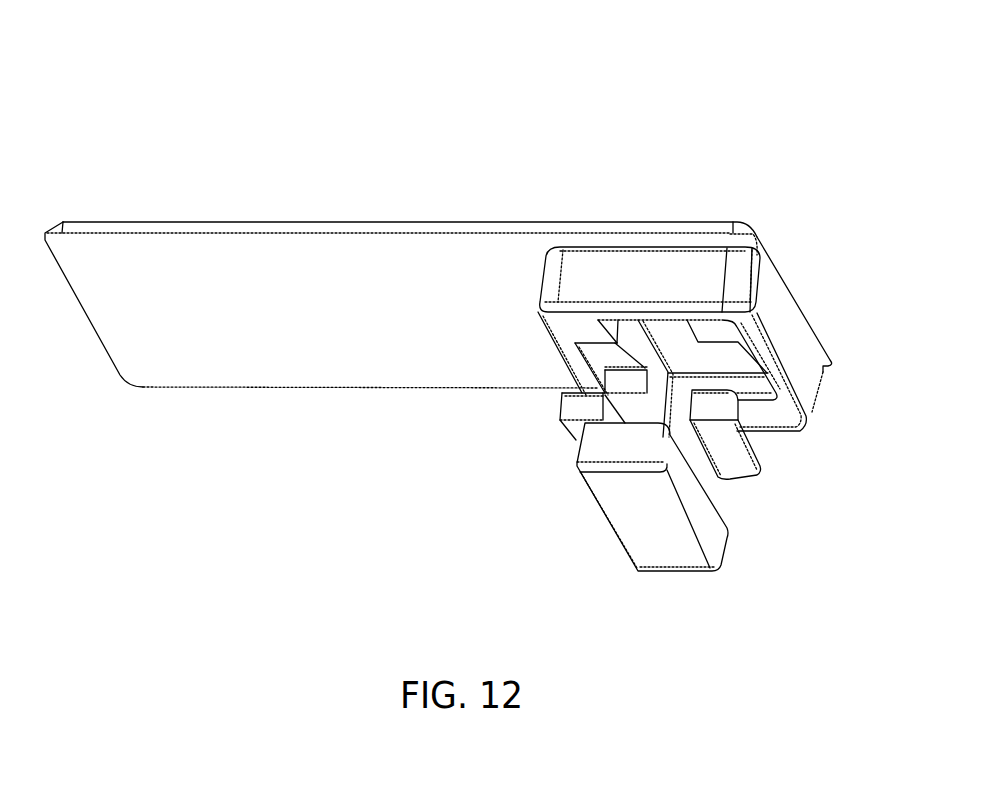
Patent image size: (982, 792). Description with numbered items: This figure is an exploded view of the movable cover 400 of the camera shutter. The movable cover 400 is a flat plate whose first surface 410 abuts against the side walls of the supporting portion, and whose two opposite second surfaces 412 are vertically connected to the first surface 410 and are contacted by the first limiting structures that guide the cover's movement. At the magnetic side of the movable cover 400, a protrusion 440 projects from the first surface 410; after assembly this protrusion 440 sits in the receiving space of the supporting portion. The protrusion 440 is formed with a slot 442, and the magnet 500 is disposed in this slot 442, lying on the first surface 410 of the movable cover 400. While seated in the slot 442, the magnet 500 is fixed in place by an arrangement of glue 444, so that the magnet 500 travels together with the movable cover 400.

The movable cover 400 is at (222, 88).
The first surface 410 is at (218, 357).
The second surfaces 412 is at (158, 227).
The protrusion 440 is at (657, 268).
The slot 442 is at (678, 357).
The glue 444 is at (572, 409).
The magnet 500 is at (653, 557).